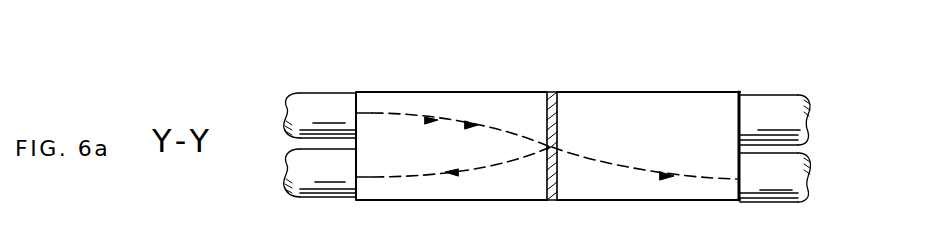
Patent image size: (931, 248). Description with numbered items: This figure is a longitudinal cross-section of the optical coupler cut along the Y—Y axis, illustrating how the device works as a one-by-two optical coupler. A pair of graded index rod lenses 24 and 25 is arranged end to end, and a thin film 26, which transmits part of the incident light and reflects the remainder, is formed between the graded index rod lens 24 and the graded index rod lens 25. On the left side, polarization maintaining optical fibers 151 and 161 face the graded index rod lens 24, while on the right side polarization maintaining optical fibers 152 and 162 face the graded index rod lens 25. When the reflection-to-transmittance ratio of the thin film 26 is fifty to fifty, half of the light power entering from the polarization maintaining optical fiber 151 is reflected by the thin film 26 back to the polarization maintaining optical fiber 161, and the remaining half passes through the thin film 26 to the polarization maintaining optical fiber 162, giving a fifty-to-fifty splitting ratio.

The polarization maintaining optical fiber 151 is at (302, 106).
The polarization maintaining optical fiber 161 is at (308, 182).
The polarization maintaining optical fiber 152 is at (790, 112).
The polarization maintaining optical fiber 162 is at (792, 186).
The graded index rod lens 24 is at (452, 92).
The graded index rod lens 25 is at (690, 92).
The thin film 26 is at (547, 108).